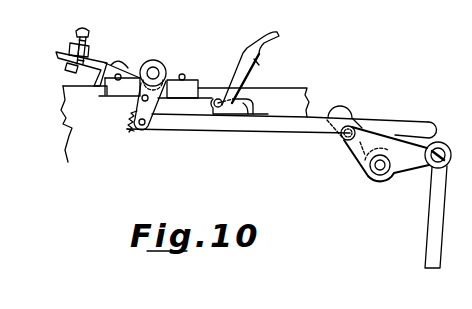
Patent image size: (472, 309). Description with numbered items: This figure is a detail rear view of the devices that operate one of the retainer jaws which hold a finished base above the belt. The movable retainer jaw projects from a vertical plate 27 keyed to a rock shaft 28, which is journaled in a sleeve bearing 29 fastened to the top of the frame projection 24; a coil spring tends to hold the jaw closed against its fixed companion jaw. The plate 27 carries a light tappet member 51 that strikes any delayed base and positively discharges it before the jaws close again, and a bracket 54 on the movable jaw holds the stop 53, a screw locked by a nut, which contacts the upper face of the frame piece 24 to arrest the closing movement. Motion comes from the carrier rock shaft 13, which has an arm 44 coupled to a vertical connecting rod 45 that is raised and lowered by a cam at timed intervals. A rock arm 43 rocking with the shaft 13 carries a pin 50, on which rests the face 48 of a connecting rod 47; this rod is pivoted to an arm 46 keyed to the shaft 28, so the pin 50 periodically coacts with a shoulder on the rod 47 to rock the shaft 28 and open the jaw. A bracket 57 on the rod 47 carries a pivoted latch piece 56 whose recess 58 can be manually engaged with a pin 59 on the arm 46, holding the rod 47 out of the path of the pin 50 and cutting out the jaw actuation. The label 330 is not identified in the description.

The carrier rock shaft 13 is at (366, 181).
The frame projection 24 is at (185, 124).
The vertical plate 27 is at (132, 77).
The rock shaft 28 is at (156, 66).
The sleeve bearing 29 is at (194, 86).
The rock arm 43 is at (340, 108).
The arm 44 is at (412, 170).
The vertical connecting rod 45 is at (428, 257).
The arm 46 is at (132, 110).
The connecting rod 47 is at (260, 130).
The face 48 is at (398, 122).
The pin 50 is at (344, 138).
The tappet member 51 is at (115, 61).
The stop 53 is at (84, 28).
The bracket 54 is at (57, 53).
The latch piece 56 is at (264, 62).
The bracket 57 is at (221, 107).
The recess 58 is at (241, 53).
The pin 59 is at (110, 96).
The stop 330 is at (130, 135).